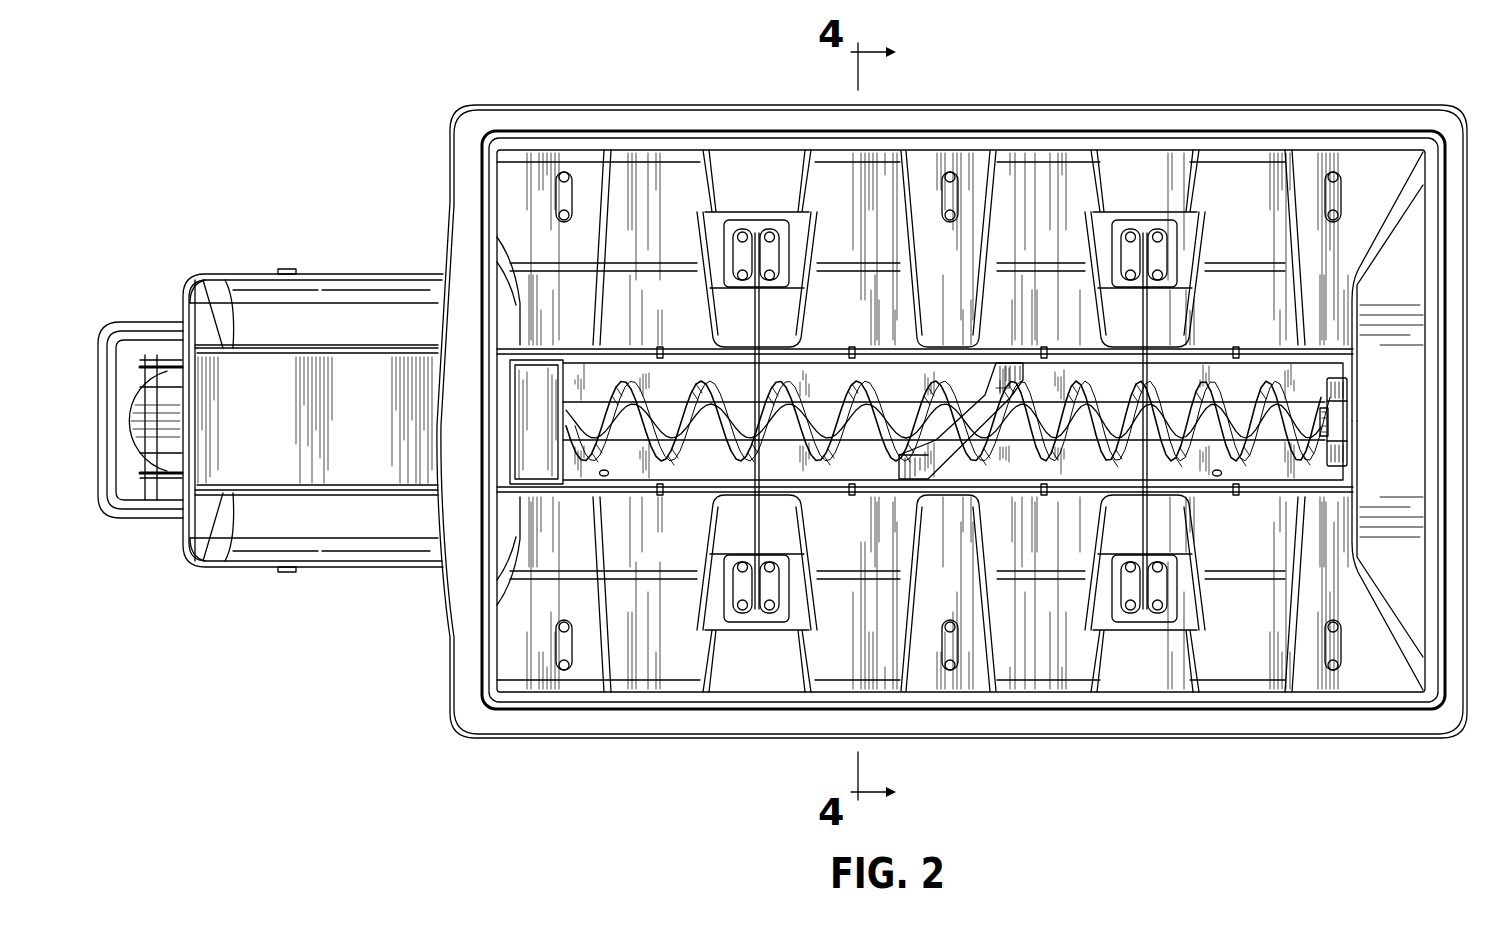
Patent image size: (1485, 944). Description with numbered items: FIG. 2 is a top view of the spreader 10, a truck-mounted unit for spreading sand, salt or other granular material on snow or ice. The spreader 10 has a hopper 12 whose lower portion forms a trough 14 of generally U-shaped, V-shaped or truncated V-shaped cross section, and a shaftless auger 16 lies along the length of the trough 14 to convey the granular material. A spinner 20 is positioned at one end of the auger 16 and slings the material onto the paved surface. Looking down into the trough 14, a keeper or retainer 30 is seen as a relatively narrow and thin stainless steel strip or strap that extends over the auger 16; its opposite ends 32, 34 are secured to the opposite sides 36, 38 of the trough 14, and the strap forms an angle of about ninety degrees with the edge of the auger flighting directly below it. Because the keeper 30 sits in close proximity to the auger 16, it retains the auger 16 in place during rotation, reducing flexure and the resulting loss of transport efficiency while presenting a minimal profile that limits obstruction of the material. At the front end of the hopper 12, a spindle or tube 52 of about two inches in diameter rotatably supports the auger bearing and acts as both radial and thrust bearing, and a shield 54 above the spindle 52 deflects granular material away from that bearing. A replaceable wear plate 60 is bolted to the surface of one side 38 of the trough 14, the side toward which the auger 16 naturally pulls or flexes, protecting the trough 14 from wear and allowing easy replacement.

The spreader 10 is at (232, 93).
The hopper 12 is at (1110, 107).
The trough 14 is at (925, 427).
The shaftless auger 16 is at (848, 385).
The spinner 20 is at (127, 400).
The keeper or retainer 30 is at (930, 418).
The end of keeper strap 32 is at (1000, 363).
The end of keeper strap 34 is at (906, 480).
The side of trough 36 is at (1203, 365).
The side of trough 38 is at (1243, 473).
The spindle or tube 52 is at (1328, 422).
The shield 54 is at (1343, 392).
The replaceable wear plate 60 is at (808, 455).